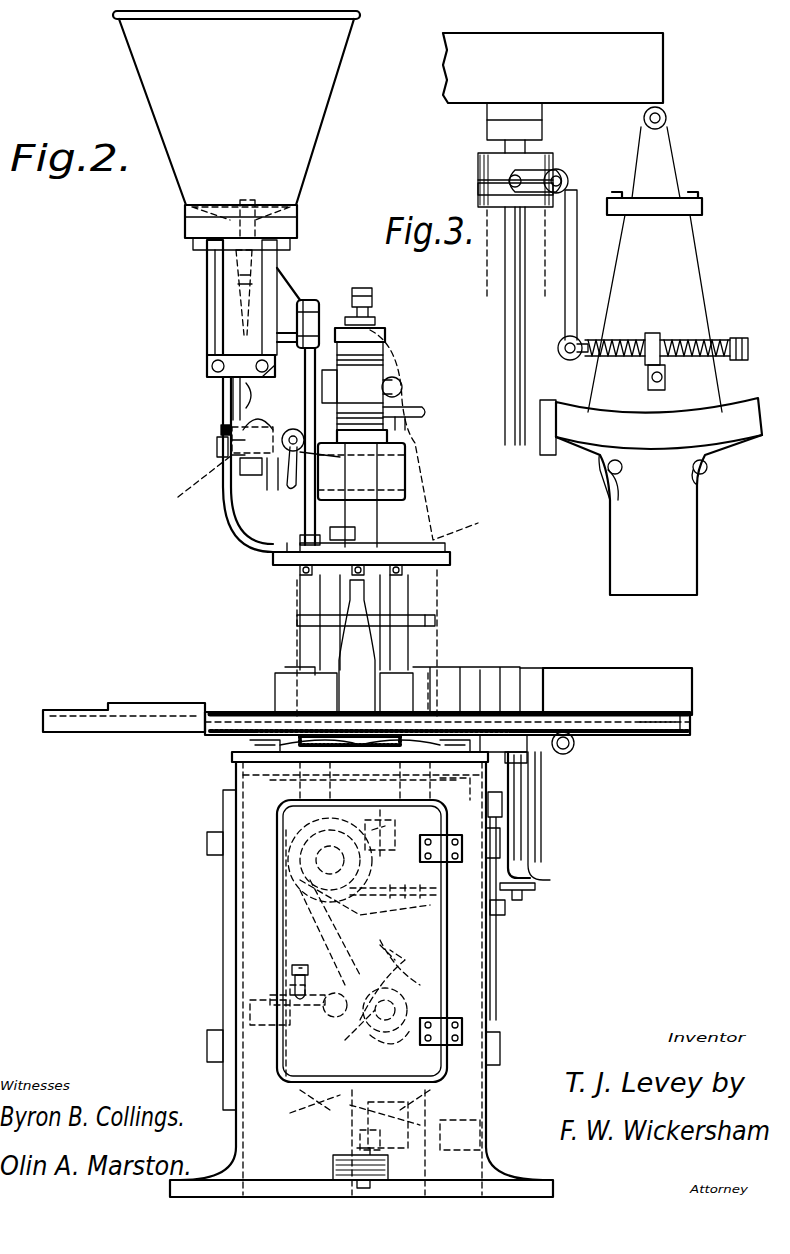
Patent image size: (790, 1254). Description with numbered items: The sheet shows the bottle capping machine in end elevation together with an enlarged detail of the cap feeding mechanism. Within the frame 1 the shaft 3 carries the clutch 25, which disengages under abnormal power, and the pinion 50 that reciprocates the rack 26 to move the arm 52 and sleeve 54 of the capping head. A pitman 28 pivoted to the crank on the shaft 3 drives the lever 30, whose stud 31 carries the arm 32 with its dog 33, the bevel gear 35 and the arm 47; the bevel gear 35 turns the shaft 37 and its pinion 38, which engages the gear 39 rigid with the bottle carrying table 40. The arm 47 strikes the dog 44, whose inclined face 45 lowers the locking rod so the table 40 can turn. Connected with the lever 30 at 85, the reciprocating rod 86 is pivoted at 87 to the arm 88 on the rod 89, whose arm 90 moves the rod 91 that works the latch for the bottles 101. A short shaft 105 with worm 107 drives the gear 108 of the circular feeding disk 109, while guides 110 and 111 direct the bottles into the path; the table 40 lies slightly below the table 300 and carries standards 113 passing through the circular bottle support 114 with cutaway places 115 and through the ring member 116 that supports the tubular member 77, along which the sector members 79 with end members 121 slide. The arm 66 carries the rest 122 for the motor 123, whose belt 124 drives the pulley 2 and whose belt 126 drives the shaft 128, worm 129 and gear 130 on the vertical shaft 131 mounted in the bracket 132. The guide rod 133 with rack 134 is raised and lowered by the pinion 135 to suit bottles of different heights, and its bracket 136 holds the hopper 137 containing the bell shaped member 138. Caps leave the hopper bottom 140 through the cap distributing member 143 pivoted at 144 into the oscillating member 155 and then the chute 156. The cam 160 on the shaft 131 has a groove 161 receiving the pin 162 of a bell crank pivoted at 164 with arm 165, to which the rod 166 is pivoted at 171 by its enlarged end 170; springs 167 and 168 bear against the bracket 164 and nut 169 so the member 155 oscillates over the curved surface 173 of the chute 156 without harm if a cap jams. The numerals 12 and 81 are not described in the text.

In FIG. 2, the frame 1 is at (245, 825).
In FIG. 2, the pulley 2 is at (373, 1122).
In FIG. 2, the shaft 3 is at (396, 986).
In FIG. 2, the bearing 12 is at (453, 787).
In FIG. 2, the clutch 25 is at (361, 1041).
In FIG. 2, the rack 26 is at (391, 971).
In FIG. 2, the link or pitman 28 is at (309, 980).
In FIG. 2, the lever 30 is at (288, 862).
In FIG. 2, the stud 31 is at (266, 955).
In FIG. 2, the arm 32 is at (285, 812).
In FIG. 2, the dog 33 is at (395, 880).
In FIG. 2, the bevel gear 35 is at (300, 840).
In FIG. 2, the shaft 37 is at (290, 785).
In FIG. 2, the pinion 38 is at (306, 693).
In FIG. 2, the gear 39 is at (396, 693).
In FIG. 2, the bottle carrying table 40 is at (447, 700).
In FIG. 2, the lever or dog 44 is at (405, 835).
In FIG. 2, the inclined face 45 is at (450, 805).
In FIG. 2, the arm 47 is at (365, 901).
In FIG. 2, the pinion 50 is at (345, 1020).
In FIG. 2, the arm 52 is at (400, 378).
In FIG. 2, the sleeve 54 is at (368, 528).
In FIG. 2, the arm 66 is at (400, 452).
In FIG. 2, the ring or tubular member 77 is at (292, 535).
In FIG. 2, the sector members 79 is at (365, 560).
In FIG. 2, the bolt 81 is at (405, 575).
In FIG. 2, the connection 85 is at (330, 932).
In FIG. 2, the reciprocating rod 86 is at (476, 906).
In FIG. 2, the pivot 87 is at (515, 905).
In FIG. 2, the arm 88 is at (535, 888).
In FIG. 2, the rod 89 is at (530, 810).
In FIG. 2, the arm 90 is at (515, 770).
In FIG. 2, the reciprocating rod 91 is at (522, 790).
In FIG. 2, the bottles 101 is at (360, 646).
In FIG. 2, the short shaft 105 is at (575, 745).
In FIG. 2, the worm 107 is at (545, 752).
In FIG. 2, the gear 108 is at (530, 760).
In FIG. 2, the circular feeding disk 109 is at (597, 712).
In FIG. 2, the guide 110 is at (650, 668).
In FIG. 2, the guide 111 is at (444, 678).
In FIG. 2, the standards 113 is at (300, 640).
In FIG. 2, the circular bottle support 114 is at (400, 600).
In FIG. 2, the cutaway places 115 is at (300, 672).
In FIG. 2, the ring member 116 is at (418, 625).
In FIG. 2, the end members 121 is at (290, 408).
In FIG. 2, the platform or rest 122 is at (412, 408).
In FIG. 2, the motor 123 is at (425, 318).
In FIG. 2, the belt 124 is at (297, 605).
In FIG. 2, the belt 126 is at (264, 386).
In FIG. 2, the shaft 128 is at (272, 462).
In FIG. 2, the worm 129 is at (186, 482).
In FIG. 2, the gear 130 is at (221, 430).
In FIG. 2, the vertical shaft 131 is at (236, 396).
In FIG. 3, the vertical shaft 131 is at (515, 305).
In FIG. 2, the standard or bracket 132 is at (217, 450).
In FIG. 2, the guide rod 133 is at (307, 350).
In FIG. 2, the rack 134 is at (340, 468).
In FIG. 2, the pinion 135 is at (375, 385).
In FIG. 2, the bracket 136 is at (207, 265).
In FIG. 2, the hopper 137 is at (318, 153).
In FIG. 2, the bell shaped member 138 is at (258, 205).
In FIG. 3, the bottom of hopper 140 is at (650, 62).
In FIG. 3, the oscillating cap distributing member 143 is at (655, 175).
In FIG. 3, the pivot 144 is at (664, 112).
In FIG. 3, the oscillating member 155 is at (680, 257).
In FIG. 2, the chute 156 is at (228, 411).
In FIG. 3, the chute 156 is at (672, 530).
In FIG. 3, the cam 160 is at (480, 173).
In FIG. 3, the groove 161 is at (480, 190).
In FIG. 3, the pin 162 is at (515, 181).
In FIG. 3, the bracket 164 is at (560, 178).
In FIG. 3, the downwardly extending arm 165 is at (575, 262).
In FIG. 3, the rod 166 is at (630, 340).
In FIG. 3, the spring 167 is at (645, 360).
In FIG. 3, the spring 168 is at (705, 340).
In FIG. 3, the nut 169 is at (748, 328).
In FIG. 3, the enlarged end 170 is at (562, 340).
In FIG. 3, the pivot 171 is at (563, 368).
In FIG. 3, the upper curved surface 173 is at (575, 415).
In FIG. 2, the table 300 is at (225, 708).